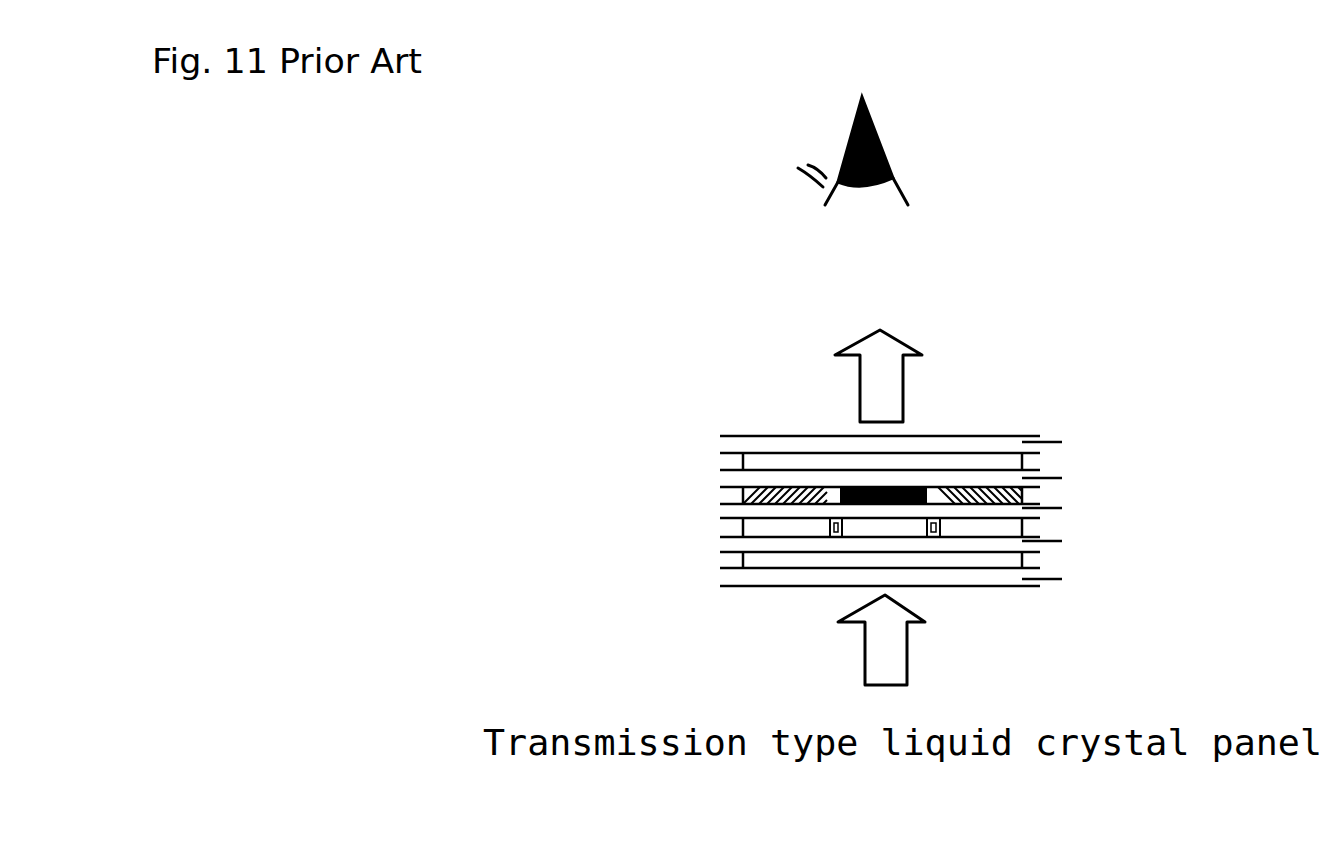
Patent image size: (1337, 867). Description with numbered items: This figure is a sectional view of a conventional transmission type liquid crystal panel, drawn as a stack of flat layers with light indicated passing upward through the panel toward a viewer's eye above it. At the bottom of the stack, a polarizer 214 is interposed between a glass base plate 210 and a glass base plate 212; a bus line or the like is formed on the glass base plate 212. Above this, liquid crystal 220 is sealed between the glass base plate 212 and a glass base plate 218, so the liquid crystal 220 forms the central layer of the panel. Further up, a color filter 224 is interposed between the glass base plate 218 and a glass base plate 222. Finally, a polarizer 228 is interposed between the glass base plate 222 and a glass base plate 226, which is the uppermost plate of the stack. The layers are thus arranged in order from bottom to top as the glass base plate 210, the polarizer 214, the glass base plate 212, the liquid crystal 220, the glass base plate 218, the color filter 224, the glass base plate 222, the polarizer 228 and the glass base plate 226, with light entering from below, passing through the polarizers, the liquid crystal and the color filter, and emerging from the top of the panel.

The glass base plate 210 is at (979, 562).
The glass base plate 212 is at (979, 524).
The polarizer 214 is at (740, 562).
The glass base plate 218 is at (979, 503).
The liquid crystal 220 is at (740, 530).
The glass base plate 222 is at (1130, 455).
The color filter 224 is at (740, 498).
The glass base plate 226 is at (1130, 417).
The polarizer 228 is at (740, 460).